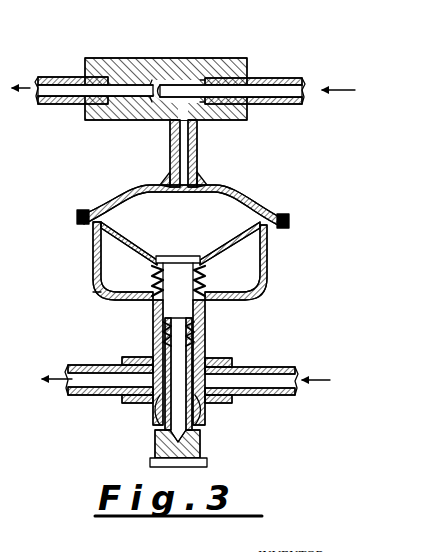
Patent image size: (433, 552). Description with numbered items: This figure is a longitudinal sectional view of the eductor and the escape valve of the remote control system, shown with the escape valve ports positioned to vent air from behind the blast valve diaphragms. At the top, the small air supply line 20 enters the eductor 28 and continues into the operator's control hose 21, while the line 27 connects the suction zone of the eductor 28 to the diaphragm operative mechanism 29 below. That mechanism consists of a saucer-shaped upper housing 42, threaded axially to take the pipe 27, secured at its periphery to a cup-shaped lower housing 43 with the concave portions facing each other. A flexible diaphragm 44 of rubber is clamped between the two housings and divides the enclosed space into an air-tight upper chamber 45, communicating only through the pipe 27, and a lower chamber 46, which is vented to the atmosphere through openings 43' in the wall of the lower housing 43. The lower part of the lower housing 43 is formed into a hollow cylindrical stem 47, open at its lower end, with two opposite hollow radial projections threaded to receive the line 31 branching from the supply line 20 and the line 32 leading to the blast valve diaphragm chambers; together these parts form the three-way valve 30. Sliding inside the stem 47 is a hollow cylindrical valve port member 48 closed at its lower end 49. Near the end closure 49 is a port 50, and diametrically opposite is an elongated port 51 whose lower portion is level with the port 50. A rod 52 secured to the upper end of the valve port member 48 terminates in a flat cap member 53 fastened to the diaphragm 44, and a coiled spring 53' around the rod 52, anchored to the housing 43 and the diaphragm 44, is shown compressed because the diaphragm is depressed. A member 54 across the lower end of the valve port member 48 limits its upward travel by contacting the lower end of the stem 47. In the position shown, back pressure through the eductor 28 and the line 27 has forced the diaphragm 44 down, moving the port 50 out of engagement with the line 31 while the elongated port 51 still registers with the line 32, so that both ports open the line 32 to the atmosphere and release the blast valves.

The air supply line 20 is at (284, 78).
The operator's control hose 21 is at (60, 77).
The line 27 is at (198, 147).
The eductor 28 is at (167, 58).
The diaphragm operative mechanism 29 is at (292, 221).
The three-way valve 30 is at (208, 360).
The line 31 is at (276, 367).
The line 32 is at (103, 365).
The upper housing 42 is at (238, 202).
The lower housing 43 is at (197, 261).
The openings 43' is at (186, 301).
The flexible diaphragm 44 is at (120, 238).
The upper chamber 45 is at (212, 219).
The lower chamber 46 is at (236, 286).
The hollow cylindrical stem 47 is at (165, 331).
The valve port member 48 is at (196, 334).
The lower end 49 is at (201, 447).
The port 50 is at (200, 437).
The elongated port 51 is at (160, 420).
The rod 52 is at (152, 274).
The cap member 53 is at (182, 249).
The coiled spring 53' is at (126, 281).
The member 54 is at (206, 466).